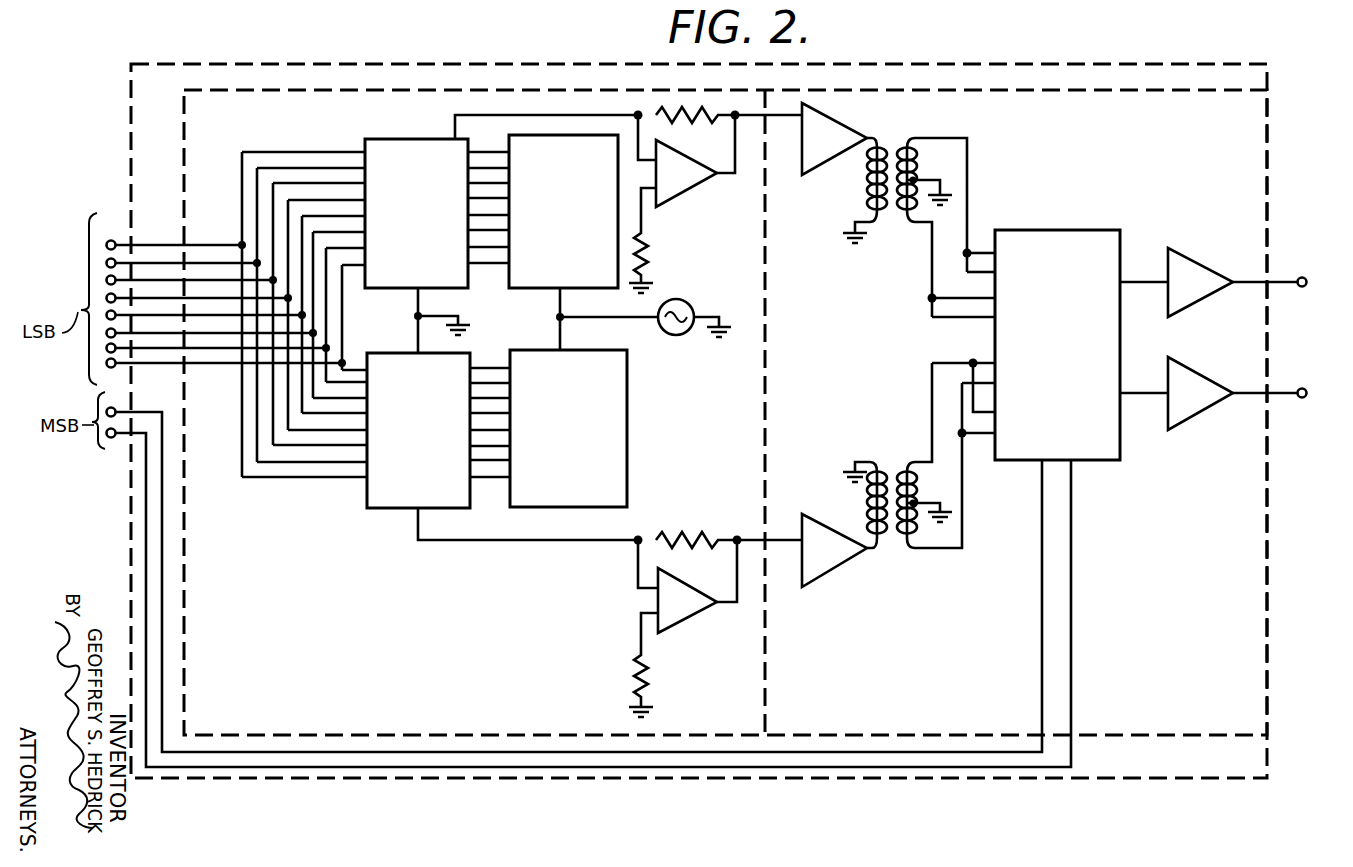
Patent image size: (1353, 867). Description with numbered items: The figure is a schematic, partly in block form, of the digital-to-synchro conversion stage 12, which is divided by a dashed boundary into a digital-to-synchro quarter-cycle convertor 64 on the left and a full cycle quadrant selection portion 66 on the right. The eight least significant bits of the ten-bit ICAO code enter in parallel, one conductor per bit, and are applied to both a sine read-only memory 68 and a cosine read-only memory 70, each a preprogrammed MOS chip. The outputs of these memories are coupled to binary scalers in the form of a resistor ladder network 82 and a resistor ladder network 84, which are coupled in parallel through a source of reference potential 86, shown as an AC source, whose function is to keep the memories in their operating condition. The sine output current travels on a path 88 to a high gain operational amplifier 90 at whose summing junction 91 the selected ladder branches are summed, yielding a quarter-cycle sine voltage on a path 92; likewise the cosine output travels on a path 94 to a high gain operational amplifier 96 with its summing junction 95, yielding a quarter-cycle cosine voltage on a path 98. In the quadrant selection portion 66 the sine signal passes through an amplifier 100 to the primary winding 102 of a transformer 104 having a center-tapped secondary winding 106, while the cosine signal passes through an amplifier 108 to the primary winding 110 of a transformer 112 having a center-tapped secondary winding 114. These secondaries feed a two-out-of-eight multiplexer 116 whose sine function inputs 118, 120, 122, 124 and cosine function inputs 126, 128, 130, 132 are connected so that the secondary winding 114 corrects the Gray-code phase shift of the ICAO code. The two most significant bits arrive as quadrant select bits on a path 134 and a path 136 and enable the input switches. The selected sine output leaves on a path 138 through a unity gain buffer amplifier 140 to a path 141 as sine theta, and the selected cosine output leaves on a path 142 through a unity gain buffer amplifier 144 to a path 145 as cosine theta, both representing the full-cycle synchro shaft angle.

The digital-to-synchro conversion stage 12 is at (610, 782).
The digital-to-synchro quarter-cycle convertor 64 is at (283, 740).
The full cycle quadrant selection portion 66 is at (1152, 740).
The sine read-only memory 68 is at (368, 136).
The cosine read-only memory 70 is at (378, 506).
The R-2R ladder network 82 is at (544, 290).
The R-2R ladder network 84 is at (627, 412).
The source of reference potential 86 is at (690, 307).
The path 88 is at (565, 114).
The high gain operational amplifier 90 is at (686, 192).
The summing junction 91 is at (638, 112).
The path 92 is at (738, 119).
The path 94 is at (558, 542).
The summing junction 95 is at (641, 537).
The high gain operational amplifier 96 is at (682, 620).
The path 98 is at (739, 537).
The amplifier 100 is at (816, 168).
The primary winding 102 is at (869, 197).
The transformer 104 is at (898, 204).
The center-tapped secondary winding 106 is at (919, 171).
The amplifier 108 is at (826, 572).
The primary winding 110 is at (870, 516).
The transformer 112 is at (892, 483).
The center-tapped secondary winding 114 is at (919, 494).
The 2-out-of-8 multiplexer 116 is at (1078, 229).
The sine function input 118 is at (1000, 259).
The sine function input 120 is at (1000, 278).
The sine function input 122 is at (997, 304).
The sine function input 124 is at (1010, 316).
The cosine function input 126 is at (997, 366).
The cosine function input 128 is at (998, 384).
The cosine function input 130 is at (998, 410).
The cosine function input 132 is at (998, 434).
The path 134 is at (1040, 638).
The path 136 is at (1073, 632).
The path 138 is at (1135, 280).
The unity gain buffer amplifier 140 is at (1205, 266).
The path 141 is at (1299, 287).
The path 142 is at (1133, 392).
The unity gain buffer amplifier 144 is at (1198, 460).
The path 145 is at (1300, 389).